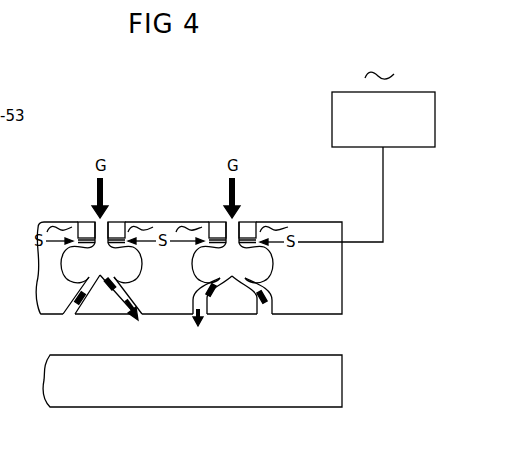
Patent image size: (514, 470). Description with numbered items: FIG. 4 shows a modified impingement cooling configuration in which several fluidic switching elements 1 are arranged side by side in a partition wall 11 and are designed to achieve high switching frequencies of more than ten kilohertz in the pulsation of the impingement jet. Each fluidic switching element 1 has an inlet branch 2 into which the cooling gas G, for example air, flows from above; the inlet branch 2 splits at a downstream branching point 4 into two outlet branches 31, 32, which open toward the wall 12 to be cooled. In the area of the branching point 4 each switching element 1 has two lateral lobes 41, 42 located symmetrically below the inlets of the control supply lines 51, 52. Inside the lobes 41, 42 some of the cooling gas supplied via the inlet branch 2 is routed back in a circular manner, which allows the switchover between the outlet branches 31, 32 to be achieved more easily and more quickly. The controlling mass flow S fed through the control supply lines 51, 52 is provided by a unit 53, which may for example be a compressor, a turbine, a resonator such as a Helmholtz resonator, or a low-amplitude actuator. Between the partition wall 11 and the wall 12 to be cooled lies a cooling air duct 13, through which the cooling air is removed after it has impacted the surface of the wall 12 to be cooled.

The fluidic switching element 1 is at (117, 219).
The inlet branch 2 is at (102, 230).
The branching point 4 is at (157, 261).
The partition wall 11 is at (318, 232).
The wall to be cooled 12 is at (196, 398).
The cooling air duct 13 is at (325, 341).
The outlet branch 31 is at (72, 297).
The outlet branch 32 is at (118, 292).
The lateral lobe 41 is at (67, 268).
The lateral lobe 42 is at (130, 262).
The control supply line 51 is at (85, 233).
The control supply line 52 is at (123, 232).
The unit 53 is at (437, 112).